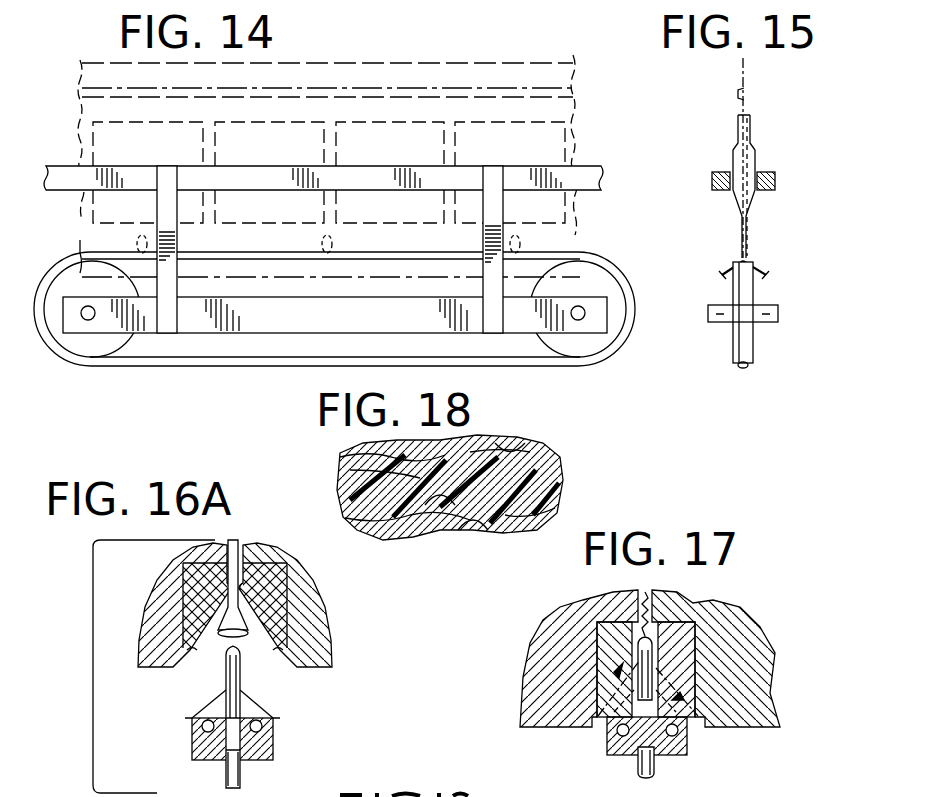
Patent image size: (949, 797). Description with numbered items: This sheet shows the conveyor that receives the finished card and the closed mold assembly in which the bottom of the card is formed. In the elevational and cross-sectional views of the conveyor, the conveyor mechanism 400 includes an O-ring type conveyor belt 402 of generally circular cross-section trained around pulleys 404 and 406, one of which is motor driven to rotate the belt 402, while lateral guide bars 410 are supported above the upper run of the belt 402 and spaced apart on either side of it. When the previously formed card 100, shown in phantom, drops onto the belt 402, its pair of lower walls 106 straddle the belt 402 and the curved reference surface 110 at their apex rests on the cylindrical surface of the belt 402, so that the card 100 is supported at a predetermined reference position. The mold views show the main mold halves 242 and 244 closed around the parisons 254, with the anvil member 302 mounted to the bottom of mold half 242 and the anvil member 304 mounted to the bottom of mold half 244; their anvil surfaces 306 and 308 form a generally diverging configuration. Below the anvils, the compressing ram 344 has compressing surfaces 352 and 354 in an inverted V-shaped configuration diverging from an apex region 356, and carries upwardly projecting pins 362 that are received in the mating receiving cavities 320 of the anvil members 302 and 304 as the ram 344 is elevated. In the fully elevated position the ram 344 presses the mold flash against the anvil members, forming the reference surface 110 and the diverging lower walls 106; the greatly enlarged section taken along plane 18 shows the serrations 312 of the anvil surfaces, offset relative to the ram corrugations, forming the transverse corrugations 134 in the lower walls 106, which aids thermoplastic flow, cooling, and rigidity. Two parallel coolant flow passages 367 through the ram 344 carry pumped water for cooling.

In FIG. 14, the card 100 is at (573, 97).
In FIG. 15, the card 100 is at (745, 108).
In FIG. 15, the lower walls 106 is at (733, 262).
In FIG. 18, the lower walls 106 is at (578, 496).
In FIG. 17, the lower walls 106 is at (612, 712).
In FIG. 15, the reference surface 110 is at (750, 258).
In FIG. 18, the transverse corrugations 134 is at (517, 443).
In FIG. 17, the section plane 18— 18 is at (648, 684).
In FIG. 16A, the main mold half 242 is at (163, 615).
In FIG. 17, the main mold half 242 is at (573, 667).
In FIG. 16A, the main mold half 244 is at (315, 628).
In FIG. 17, the main mold half 244 is at (740, 672).
In FIG. 16A, the parisons 254 is at (238, 542).
In FIG. 18, the anvil member 302 is at (560, 452).
In FIG. 16A, the anvil member 302 is at (197, 578).
In FIG. 17, the anvil member 302 is at (617, 632).
In FIG. 16A, the anvil member 304 is at (257, 590).
In FIG. 17, the anvil member 304 is at (682, 648).
In FIG. 16A, the anvil surface 306 is at (190, 650).
In FIG. 16A, the anvil surface 308 is at (265, 647).
In FIG. 18, the serrations 312 is at (485, 480).
In FIG. 16A, the receiving cavities 320 is at (230, 555).
In FIG. 18, the compressing ram 344 is at (565, 520).
In FIG. 16A, the compressing ram 344 is at (277, 748).
In FIG. 17, the compressing ram 344 is at (605, 750).
In FIG. 16A, the compressing surface 352 is at (200, 700).
In FIG. 16A, the compressing surface 354 is at (267, 718).
In FIG. 16A, the apex region 356 is at (205, 719).
In FIG. 16A, the pins 362 is at (223, 662).
In FIG. 17, the pins 362 is at (649, 640).
In FIG. 16A, the coolant flow passages 367 is at (206, 762).
In FIG. 17, the coolant flow passages 367 is at (625, 732).
In FIG. 14, the conveyor mechanism 400 is at (156, 370).
In FIG. 15, the conveyor mechanism 400 is at (768, 363).
In FIG. 14, the conveyor belt 402 is at (372, 360).
In FIG. 15, the conveyor belt 402 is at (747, 270).
In FIG. 14, the pulley 404 is at (97, 342).
In FIG. 15, the pulley 404 is at (755, 343).
In FIG. 14, the pulley 406 is at (575, 346).
In FIG. 14, the guide bars 410 is at (583, 180).